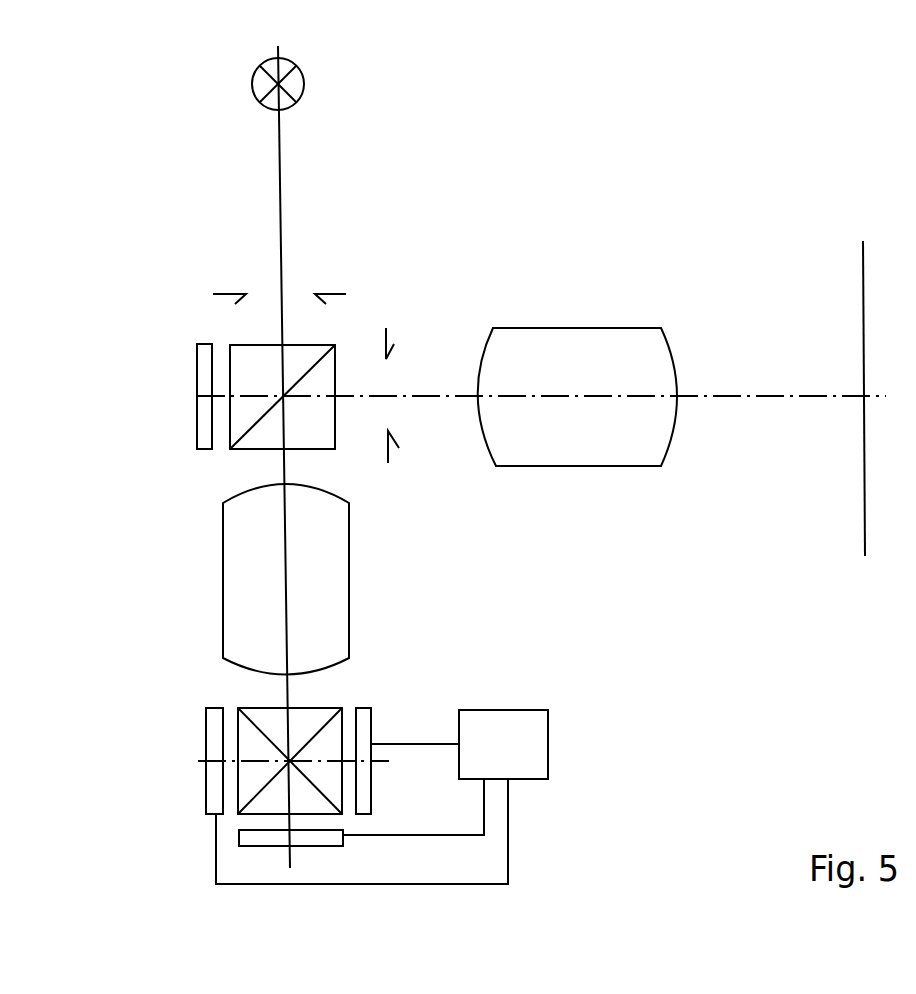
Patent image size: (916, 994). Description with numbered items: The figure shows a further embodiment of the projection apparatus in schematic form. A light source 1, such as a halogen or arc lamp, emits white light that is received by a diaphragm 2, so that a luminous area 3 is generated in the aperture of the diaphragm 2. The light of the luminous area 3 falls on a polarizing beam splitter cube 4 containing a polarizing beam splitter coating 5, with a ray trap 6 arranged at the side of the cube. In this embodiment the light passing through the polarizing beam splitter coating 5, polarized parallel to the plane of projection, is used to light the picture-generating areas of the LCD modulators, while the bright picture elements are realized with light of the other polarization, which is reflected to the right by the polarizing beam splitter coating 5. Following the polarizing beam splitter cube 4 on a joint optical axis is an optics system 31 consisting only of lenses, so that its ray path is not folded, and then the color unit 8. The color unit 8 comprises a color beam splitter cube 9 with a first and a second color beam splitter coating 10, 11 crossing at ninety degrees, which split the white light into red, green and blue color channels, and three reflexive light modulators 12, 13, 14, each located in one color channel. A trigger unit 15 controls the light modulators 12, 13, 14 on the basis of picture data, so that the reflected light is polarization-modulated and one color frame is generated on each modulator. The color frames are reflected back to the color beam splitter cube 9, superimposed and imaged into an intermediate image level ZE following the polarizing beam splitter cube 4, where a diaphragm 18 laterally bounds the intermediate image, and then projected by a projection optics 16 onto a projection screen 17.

The light source 1 is at (303, 90).
The diaphragm 2 is at (330, 292).
The luminous area 3 is at (292, 287).
The polarizing beam splitter cube 4 is at (320, 344).
The polarizing beam splitter coating 5 is at (337, 366).
The ray trap 6 is at (196, 420).
The intermediate image level ZE is at (387, 341).
The color unit 8 is at (162, 757).
The color beam splitter cube 9 is at (265, 707).
The first color beam splitter coating 10 is at (325, 703).
The second color beam splitter coating 11 is at (250, 715).
The light modulator 12 is at (375, 712).
The light modulator 13 is at (323, 846).
The light modulator 14 is at (205, 780).
The trigger unit 15 is at (547, 748).
The projection optics 16 is at (575, 327).
The projection screen 17 is at (862, 256).
The diaphragm 18 is at (388, 455).
The optics system 31 is at (350, 603).